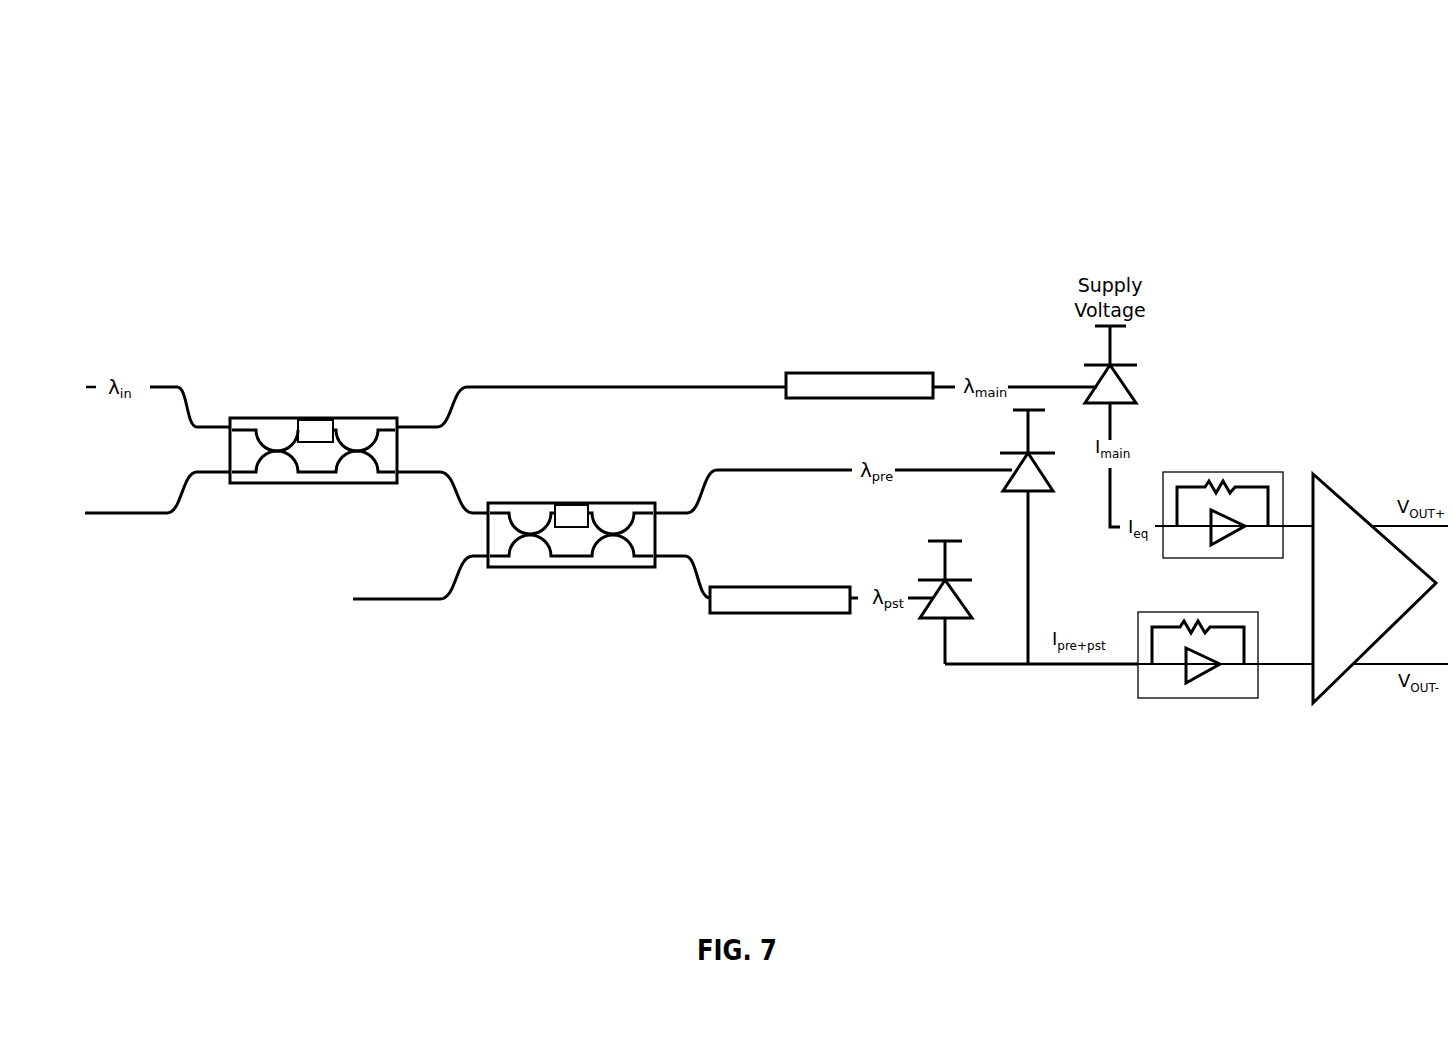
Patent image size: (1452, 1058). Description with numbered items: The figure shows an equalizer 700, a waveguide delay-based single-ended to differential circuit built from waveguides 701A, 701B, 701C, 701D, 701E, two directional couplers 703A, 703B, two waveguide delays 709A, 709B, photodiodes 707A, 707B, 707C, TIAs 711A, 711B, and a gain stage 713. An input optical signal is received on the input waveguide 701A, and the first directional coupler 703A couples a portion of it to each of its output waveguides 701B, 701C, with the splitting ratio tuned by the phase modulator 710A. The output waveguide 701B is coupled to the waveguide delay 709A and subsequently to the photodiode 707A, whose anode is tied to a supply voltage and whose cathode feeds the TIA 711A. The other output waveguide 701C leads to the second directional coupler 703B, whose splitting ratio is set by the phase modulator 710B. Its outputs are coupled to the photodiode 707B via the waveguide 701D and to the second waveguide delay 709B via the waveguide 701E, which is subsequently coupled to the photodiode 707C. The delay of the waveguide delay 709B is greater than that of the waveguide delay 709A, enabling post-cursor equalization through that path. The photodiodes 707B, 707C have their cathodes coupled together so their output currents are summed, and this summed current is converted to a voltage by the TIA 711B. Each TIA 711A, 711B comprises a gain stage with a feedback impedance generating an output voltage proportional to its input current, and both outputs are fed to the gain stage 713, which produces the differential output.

The equalizer 700 is at (322, 122).
The input waveguide 701A is at (152, 387).
The output waveguide 701B is at (750, 387).
The output waveguide 701C is at (447, 483).
The waveguide 701D is at (710, 470).
The waveguide 701E is at (695, 585).
The first directional coupler 703A is at (378, 418).
The second directional coupler 703B is at (620, 503).
The photodiode 707A is at (1137, 399).
The photodiode 707B is at (1047, 493).
The photodiode 707C is at (933, 580).
The waveguide delay 709A is at (835, 373).
The waveguide delay 709B is at (752, 587).
The phase modulator 710A is at (308, 418).
The phase modulator 710B is at (567, 503).
The TIA 711A is at (1227, 472).
The TIA 711B is at (1217, 698).
The gain stage 713 is at (1327, 484).